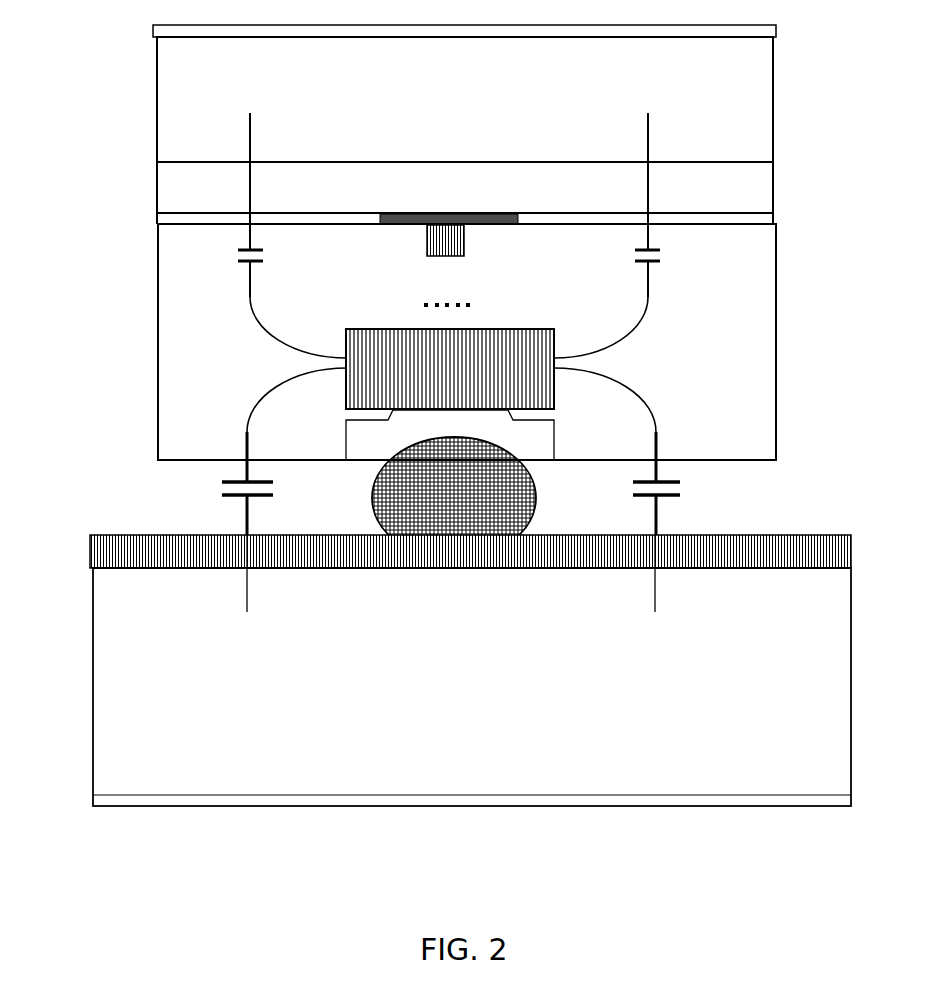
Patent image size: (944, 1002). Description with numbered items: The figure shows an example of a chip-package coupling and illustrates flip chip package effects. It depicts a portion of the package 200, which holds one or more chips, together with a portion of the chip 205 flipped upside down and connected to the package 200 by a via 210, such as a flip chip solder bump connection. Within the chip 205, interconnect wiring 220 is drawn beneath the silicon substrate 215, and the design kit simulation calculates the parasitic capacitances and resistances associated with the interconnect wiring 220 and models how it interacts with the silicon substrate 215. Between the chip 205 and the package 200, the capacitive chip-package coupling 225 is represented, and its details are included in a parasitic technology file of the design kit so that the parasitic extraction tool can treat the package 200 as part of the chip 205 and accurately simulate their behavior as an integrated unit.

The package 200 is at (85, 537).
The chip 205 is at (113, 27).
The via 210 is at (507, 507).
The silicon substrate 215 is at (759, 63).
The interconnect wiring 220 is at (650, 277).
The capacitive chip-package coupling 225 is at (656, 514).